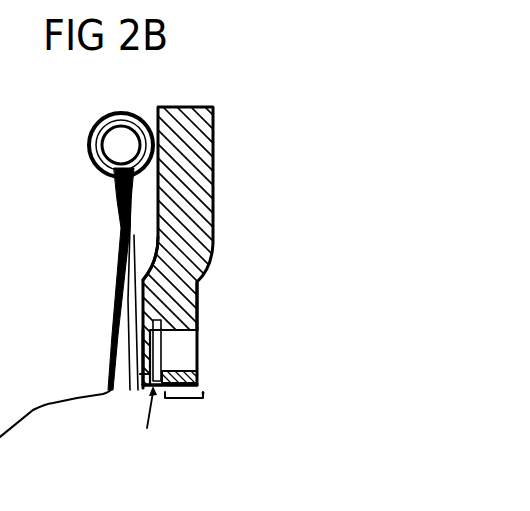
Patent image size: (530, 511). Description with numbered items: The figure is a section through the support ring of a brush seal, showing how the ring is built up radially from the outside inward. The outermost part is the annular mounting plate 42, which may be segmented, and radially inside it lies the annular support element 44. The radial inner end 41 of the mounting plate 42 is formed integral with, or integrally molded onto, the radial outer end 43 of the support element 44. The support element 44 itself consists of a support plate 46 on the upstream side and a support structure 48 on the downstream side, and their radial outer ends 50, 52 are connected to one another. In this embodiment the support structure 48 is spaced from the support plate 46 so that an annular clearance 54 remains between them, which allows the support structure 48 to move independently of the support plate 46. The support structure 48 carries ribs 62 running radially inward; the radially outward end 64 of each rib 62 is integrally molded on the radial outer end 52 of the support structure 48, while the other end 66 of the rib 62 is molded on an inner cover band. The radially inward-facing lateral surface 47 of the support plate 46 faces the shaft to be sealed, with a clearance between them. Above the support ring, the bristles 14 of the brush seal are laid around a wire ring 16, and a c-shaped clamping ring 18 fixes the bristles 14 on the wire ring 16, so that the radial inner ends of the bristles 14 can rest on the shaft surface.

The bristle 14 is at (117, 190).
The wire ring 16 is at (118, 143).
The clamping ring 18 is at (97, 132).
The radial inner end 41 is at (158, 239).
The mounting plate 42 is at (220, 106).
The radial outer end 43 is at (118, 257).
The support element 44 is at (220, 255).
The support plate 46 is at (140, 332).
The lateral surface 47 is at (142, 393).
The support structure 48 is at (185, 413).
The radial outer end 50 is at (137, 300).
The radial outer end 52 is at (178, 311).
The annular clearance 54 is at (139, 424).
The rib 62 is at (189, 358).
The end of rib 64 is at (153, 360).
The end of rib 66 is at (140, 374).